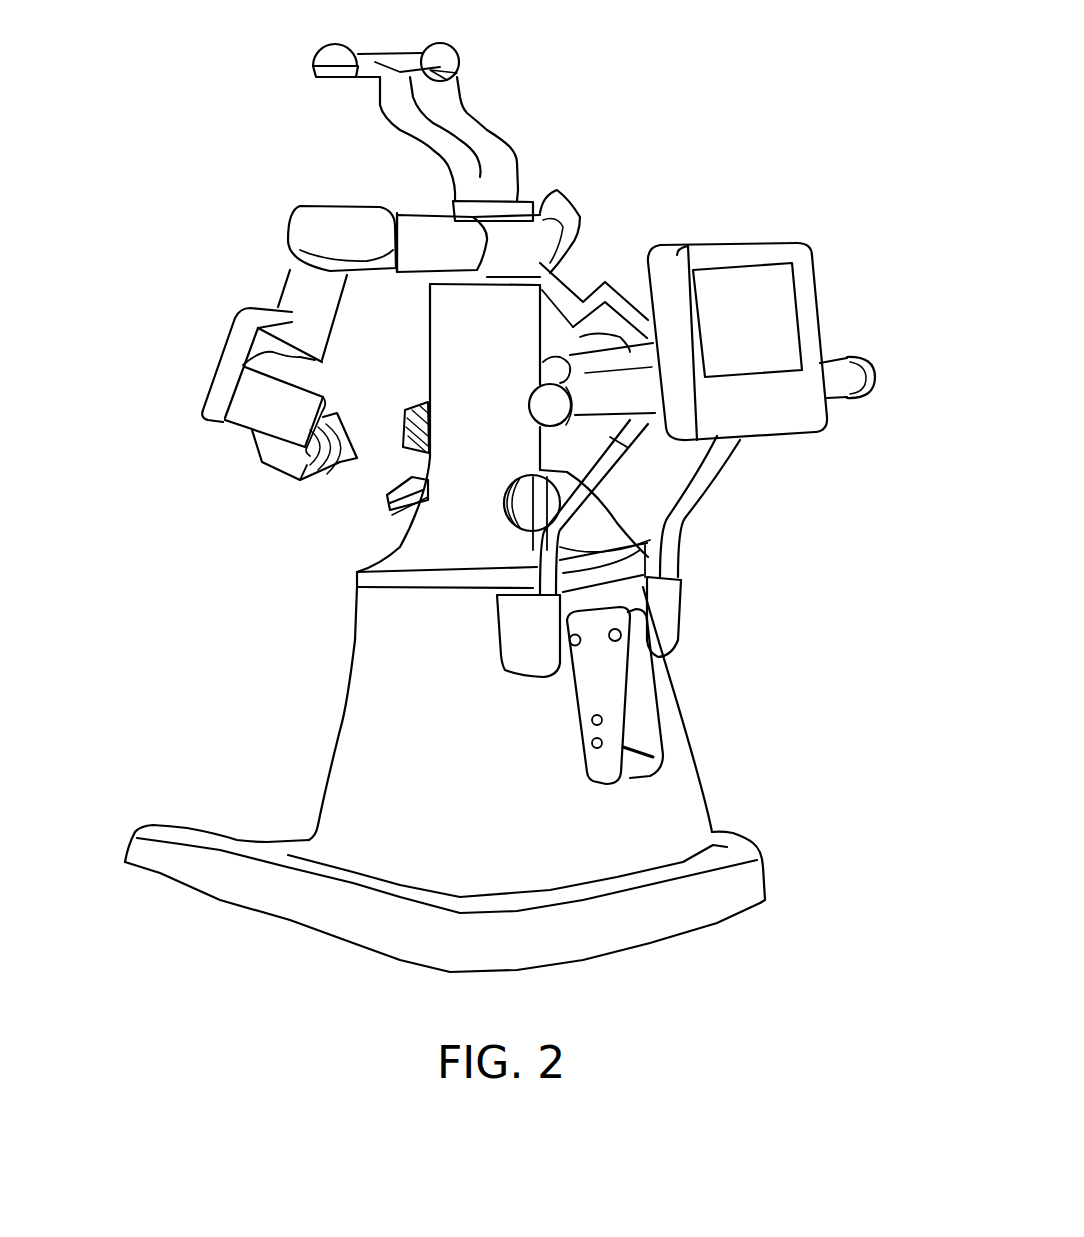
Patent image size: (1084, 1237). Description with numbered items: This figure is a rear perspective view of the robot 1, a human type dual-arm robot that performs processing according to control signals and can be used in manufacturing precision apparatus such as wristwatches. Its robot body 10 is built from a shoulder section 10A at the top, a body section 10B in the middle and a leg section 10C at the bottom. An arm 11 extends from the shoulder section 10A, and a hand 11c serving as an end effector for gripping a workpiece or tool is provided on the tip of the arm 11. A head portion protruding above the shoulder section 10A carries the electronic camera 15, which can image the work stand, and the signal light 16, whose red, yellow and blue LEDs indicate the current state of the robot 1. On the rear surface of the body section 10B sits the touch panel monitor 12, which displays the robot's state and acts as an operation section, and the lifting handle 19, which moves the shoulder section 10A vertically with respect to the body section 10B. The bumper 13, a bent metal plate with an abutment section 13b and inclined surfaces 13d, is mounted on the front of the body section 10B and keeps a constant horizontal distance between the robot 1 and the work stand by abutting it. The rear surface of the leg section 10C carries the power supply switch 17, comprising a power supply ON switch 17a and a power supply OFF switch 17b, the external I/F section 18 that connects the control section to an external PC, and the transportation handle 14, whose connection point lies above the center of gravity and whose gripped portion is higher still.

The robot 1 is at (648, 72).
The robot body 10 is at (376, 300).
The shoulder section 10A is at (500, 277).
The body section 10B is at (453, 328).
The leg section 10C is at (337, 763).
The arm 11 is at (241, 306).
The hand 11c is at (403, 427).
The touch panel monitor 12 is at (745, 307).
The bumper 13 is at (304, 498).
The abutment section 13b is at (397, 510).
The inclined surfaces 13d is at (388, 503).
The transportation handle 14 is at (830, 370).
The electronic camera 15 is at (323, 53).
The signal light 16 is at (330, 73).
The power supply switch 17 is at (752, 660).
The power supply ON switch 17a is at (615, 635).
The power supply OFF switch 17b is at (576, 641).
The external I/F section 18 is at (597, 720).
The lifting handle 19 is at (533, 523).